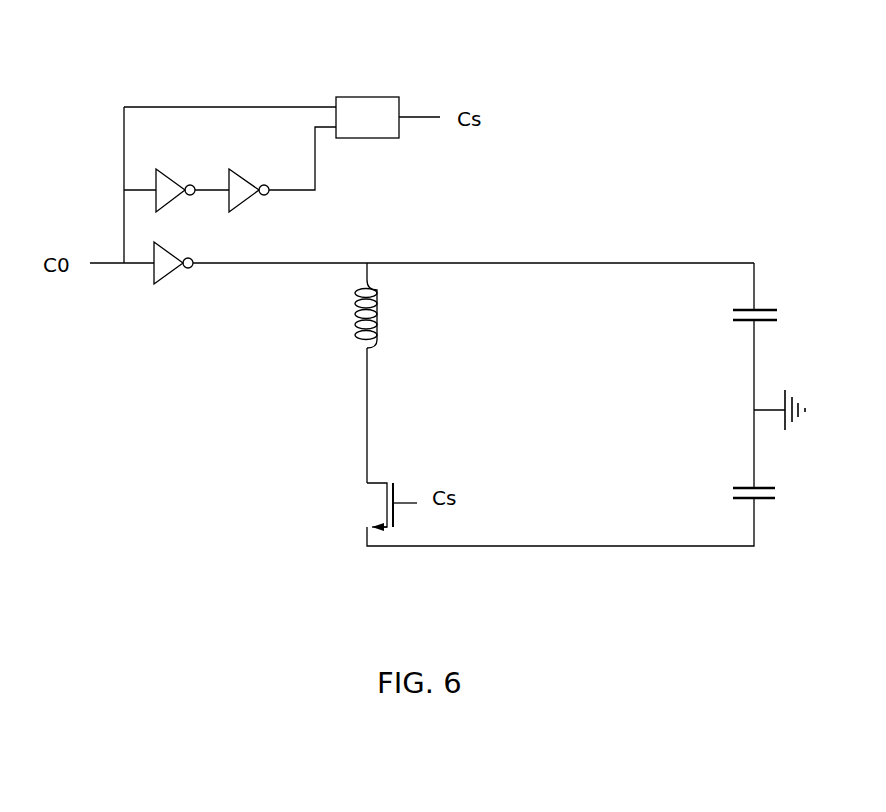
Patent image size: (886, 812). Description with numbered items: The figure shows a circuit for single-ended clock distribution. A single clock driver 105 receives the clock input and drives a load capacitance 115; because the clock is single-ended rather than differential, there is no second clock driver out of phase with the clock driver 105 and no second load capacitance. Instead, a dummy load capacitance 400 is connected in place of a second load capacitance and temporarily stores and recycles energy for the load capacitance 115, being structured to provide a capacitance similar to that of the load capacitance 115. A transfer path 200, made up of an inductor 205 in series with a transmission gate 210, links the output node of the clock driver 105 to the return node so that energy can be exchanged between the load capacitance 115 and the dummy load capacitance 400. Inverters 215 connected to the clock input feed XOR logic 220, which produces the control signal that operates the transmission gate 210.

The XOR logic 220 is at (350, 93).
The inverters 215 is at (173, 177).
The clock driver 105 is at (174, 278).
The inductor 205 is at (383, 323).
The transfer path 200 is at (437, 376).
The transmission gate 210 is at (348, 483).
The load capacitance 115 is at (773, 302).
The dummy load capacitance 400 is at (767, 503).